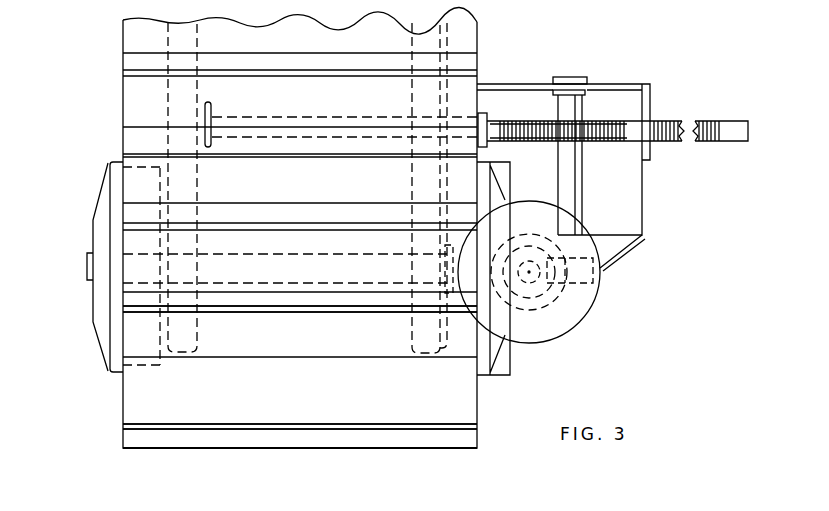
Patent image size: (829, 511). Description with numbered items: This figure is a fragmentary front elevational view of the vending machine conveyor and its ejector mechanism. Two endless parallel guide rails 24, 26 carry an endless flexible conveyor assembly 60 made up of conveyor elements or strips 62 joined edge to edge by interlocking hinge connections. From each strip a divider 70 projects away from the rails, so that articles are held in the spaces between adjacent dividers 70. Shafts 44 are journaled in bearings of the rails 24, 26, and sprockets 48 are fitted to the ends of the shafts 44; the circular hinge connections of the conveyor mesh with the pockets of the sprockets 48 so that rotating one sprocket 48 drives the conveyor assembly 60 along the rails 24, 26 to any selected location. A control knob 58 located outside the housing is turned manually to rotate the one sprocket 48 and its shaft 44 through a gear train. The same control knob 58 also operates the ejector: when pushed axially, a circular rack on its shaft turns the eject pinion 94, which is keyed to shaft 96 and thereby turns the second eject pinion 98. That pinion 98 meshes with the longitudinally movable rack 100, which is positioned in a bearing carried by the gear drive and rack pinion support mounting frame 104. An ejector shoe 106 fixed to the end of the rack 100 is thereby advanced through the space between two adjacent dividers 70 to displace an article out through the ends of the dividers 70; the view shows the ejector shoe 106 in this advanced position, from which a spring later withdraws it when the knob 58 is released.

The guide rail 24 is at (174, 353).
The guide rail 26 is at (433, 355).
The shaft 44 is at (88, 279).
The sprocket 48 is at (102, 330).
The control knob 58 is at (563, 313).
The endless flexible conveyor assembly 60 is at (258, 454).
The conveyor element or strip 62 is at (460, 400).
The divider 70 is at (255, 312).
The eject pinion 94 is at (593, 276).
The shaft 96 is at (585, 183).
The second eject pinion 98 is at (608, 130).
The rack 100 is at (732, 120).
The gear drive and rack pinion support mounting frame 104 is at (633, 84).
The ejector shoe 106 is at (211, 108).